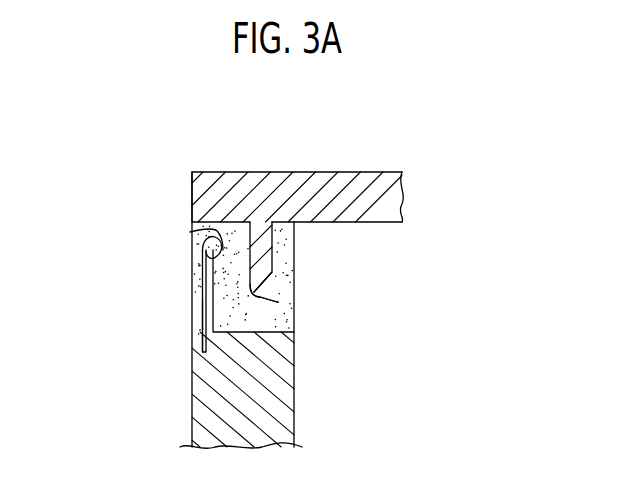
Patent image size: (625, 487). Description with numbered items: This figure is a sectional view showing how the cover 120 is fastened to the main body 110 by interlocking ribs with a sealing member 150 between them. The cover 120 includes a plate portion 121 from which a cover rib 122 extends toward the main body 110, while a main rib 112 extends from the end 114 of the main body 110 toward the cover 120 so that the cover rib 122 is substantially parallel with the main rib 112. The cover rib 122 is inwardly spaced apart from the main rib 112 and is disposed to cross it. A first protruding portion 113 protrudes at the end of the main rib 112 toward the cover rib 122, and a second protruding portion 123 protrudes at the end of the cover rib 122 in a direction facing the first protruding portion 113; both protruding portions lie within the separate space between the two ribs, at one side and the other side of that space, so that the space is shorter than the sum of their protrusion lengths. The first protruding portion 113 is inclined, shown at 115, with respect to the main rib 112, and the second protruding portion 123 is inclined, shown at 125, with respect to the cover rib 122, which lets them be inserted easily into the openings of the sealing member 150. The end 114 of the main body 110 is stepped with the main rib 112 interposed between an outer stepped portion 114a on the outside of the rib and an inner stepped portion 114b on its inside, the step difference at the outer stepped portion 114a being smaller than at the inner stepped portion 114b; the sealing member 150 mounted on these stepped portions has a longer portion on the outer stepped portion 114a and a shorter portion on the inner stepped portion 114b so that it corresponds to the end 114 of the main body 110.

The main body 110 is at (310, 384).
The main rib 112 is at (130, 285).
The first protruding portion 113 is at (190, 232).
The end of the main body 114 is at (130, 306).
The outer stepped portion 114a is at (200, 352).
The inner stepped portion 114b is at (223, 323).
The inclined portion of the first protruding portion 115 is at (186, 244).
The cover 120 is at (324, 225).
The plate portion 121 is at (270, 172).
The cover rib 122 is at (316, 290).
The second protruding portion 123 is at (256, 310).
The inclined portion of the second protruding portion 125 is at (290, 312).
The sealing member 150 is at (306, 280).